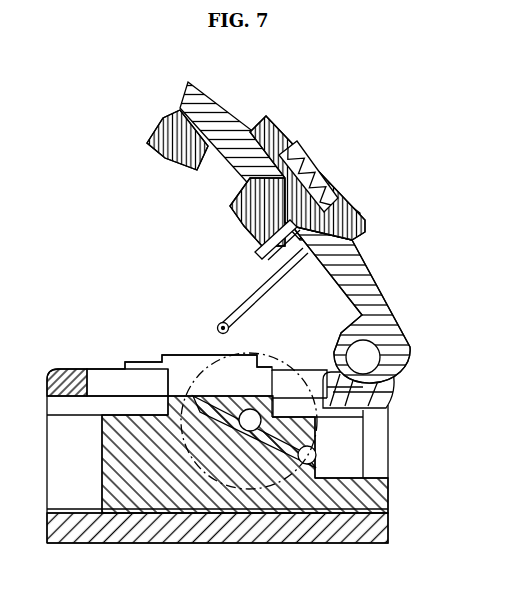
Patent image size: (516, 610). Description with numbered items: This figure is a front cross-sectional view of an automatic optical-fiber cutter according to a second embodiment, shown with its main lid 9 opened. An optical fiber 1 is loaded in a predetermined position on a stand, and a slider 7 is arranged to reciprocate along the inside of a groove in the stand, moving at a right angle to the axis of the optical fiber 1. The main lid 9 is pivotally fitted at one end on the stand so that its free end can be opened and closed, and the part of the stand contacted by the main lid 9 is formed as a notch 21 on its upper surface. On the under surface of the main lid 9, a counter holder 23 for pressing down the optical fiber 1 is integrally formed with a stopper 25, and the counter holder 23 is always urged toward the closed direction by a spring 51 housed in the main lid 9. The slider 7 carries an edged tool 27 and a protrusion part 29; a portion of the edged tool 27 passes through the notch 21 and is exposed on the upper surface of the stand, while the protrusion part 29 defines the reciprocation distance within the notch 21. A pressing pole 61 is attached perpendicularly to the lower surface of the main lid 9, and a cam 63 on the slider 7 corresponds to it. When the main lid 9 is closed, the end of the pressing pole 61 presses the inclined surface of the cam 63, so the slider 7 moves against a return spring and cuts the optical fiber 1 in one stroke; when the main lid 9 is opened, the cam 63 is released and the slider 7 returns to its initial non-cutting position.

The optical fiber 1 is at (192, 356).
The slider 7 is at (103, 466).
The main lid 9 is at (262, 118).
The notch 21 is at (87, 368).
The counter holder 23 is at (246, 217).
The stopper 25 is at (256, 253).
The edged tool 27 is at (345, 418).
The protrusion part 29 is at (150, 378).
The spring 51 is at (320, 167).
The pressing pole 61 is at (268, 290).
The cam 63 is at (282, 487).